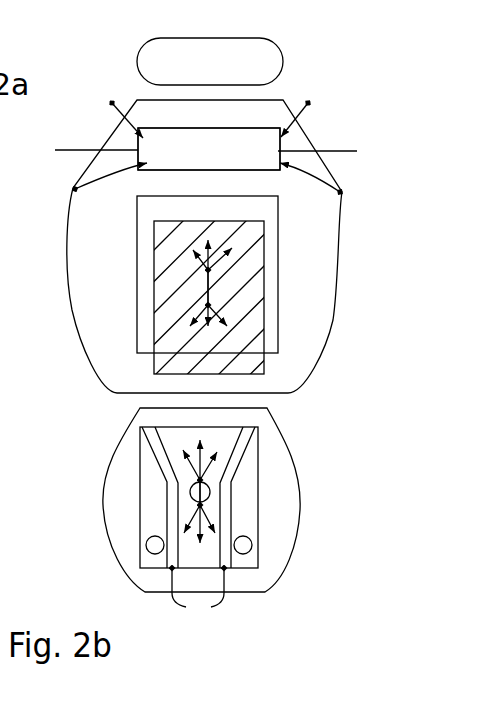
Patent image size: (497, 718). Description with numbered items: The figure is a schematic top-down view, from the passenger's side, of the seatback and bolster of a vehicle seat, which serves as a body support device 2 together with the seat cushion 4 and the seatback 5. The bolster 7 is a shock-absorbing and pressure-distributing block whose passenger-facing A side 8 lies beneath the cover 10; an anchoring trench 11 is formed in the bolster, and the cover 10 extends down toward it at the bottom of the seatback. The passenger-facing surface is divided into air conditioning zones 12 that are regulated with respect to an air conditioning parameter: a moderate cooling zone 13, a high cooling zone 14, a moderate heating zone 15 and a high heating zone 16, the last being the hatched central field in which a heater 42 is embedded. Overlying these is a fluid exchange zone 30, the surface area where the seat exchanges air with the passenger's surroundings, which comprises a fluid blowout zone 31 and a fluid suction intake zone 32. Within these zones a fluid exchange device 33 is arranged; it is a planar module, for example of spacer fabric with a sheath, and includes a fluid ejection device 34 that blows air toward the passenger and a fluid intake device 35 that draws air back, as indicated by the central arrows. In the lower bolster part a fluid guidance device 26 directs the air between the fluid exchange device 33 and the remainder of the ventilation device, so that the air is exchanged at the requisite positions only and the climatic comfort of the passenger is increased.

The body support device 2 is at (231, 253).
The seat cushion 4 is at (190, 296).
The seatback 5 is at (231, 253).
The bolster 7 is at (190, 296).
The A side 8 is at (293, 372).
The cover 10 is at (278, 470).
The anchoring trench 11 is at (198, 598).
The air conditioning zone 12 is at (276, 138).
The moderate cooling zone 13 is at (222, 344).
The high cooling zone 14 is at (282, 147).
The moderate heating zone 15 is at (208, 143).
The high heating zone 16 is at (253, 242).
The fluid guidance device 26 is at (250, 522).
The fluid exchange zone 30 is at (140, 310).
The fluid blowout zone 31 is at (281, 87).
The fluid suction intake zone 32 is at (243, 528).
The fluid exchange device 33 is at (222, 344).
The fluid ejection device 34 is at (211, 438).
The fluid intake device 35 is at (205, 344).
The heater 42 is at (152, 272).